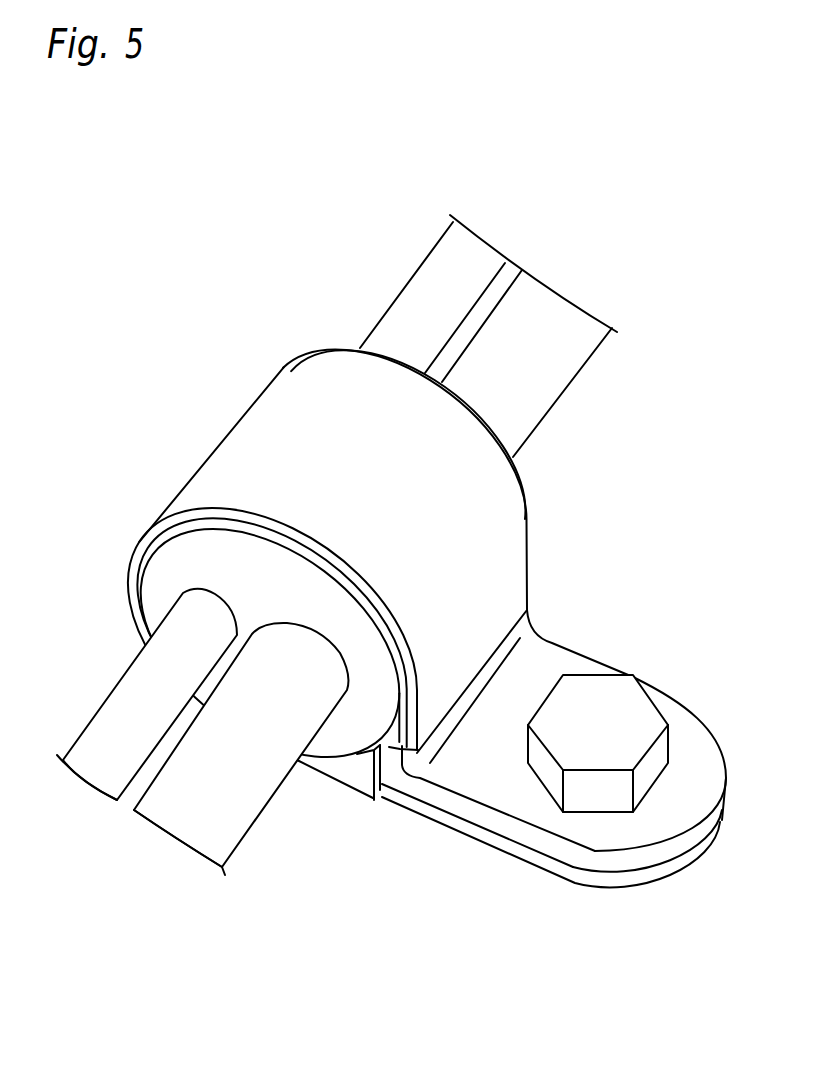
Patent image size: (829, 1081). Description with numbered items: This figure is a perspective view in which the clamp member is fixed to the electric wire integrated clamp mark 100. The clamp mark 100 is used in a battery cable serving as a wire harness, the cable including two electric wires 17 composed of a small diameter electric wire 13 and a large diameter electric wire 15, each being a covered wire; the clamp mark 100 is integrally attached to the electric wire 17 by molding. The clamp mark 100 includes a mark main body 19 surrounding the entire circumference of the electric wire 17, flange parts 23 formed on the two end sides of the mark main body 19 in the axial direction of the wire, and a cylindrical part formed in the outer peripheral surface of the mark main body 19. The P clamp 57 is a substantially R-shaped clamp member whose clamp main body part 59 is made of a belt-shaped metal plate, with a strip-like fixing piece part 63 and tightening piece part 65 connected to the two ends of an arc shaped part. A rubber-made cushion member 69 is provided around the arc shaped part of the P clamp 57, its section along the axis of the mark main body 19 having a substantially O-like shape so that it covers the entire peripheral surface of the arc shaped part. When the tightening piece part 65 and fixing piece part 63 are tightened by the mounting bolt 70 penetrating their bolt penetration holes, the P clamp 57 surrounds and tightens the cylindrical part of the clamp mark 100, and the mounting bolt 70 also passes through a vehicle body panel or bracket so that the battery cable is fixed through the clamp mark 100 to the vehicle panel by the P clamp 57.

The electric wire integrated clamp mark 100 is at (416, 590).
The electric wire 17 is at (498, 290).
The small diameter electric wire 13 is at (465, 260).
The large diameter electric wire 15 is at (563, 330).
The flange part 23 is at (344, 347).
The cushion member 69 is at (288, 420).
The P clamp 57 is at (312, 544).
The mark main body 19 is at (146, 589).
The clamp main body part 59 is at (516, 779).
The fixing piece part 63 is at (560, 878).
The tightening piece part 65 is at (693, 740).
The mounting bolt 70 is at (628, 700).